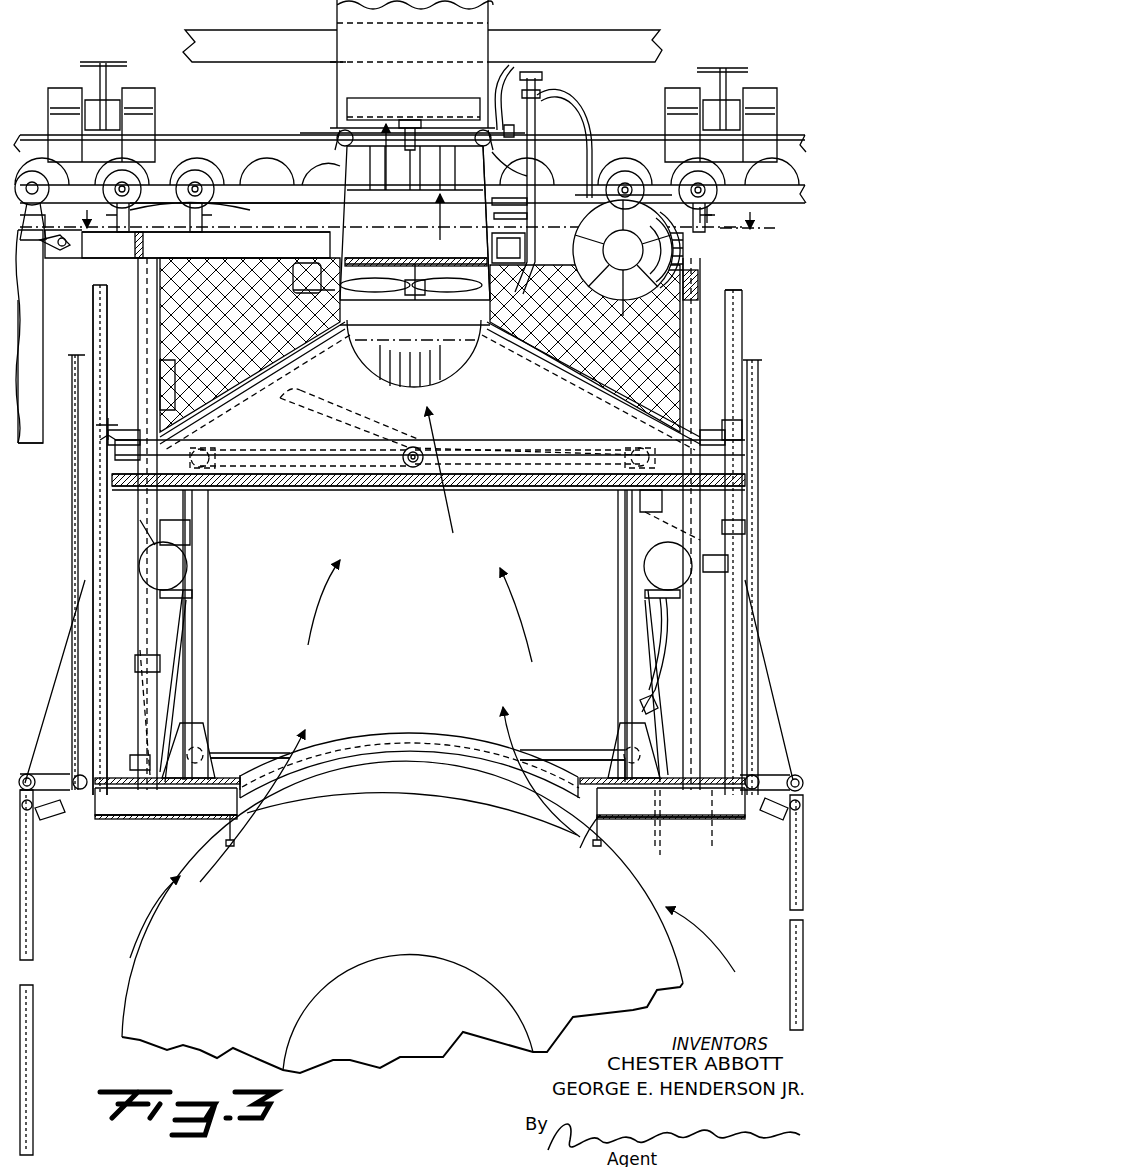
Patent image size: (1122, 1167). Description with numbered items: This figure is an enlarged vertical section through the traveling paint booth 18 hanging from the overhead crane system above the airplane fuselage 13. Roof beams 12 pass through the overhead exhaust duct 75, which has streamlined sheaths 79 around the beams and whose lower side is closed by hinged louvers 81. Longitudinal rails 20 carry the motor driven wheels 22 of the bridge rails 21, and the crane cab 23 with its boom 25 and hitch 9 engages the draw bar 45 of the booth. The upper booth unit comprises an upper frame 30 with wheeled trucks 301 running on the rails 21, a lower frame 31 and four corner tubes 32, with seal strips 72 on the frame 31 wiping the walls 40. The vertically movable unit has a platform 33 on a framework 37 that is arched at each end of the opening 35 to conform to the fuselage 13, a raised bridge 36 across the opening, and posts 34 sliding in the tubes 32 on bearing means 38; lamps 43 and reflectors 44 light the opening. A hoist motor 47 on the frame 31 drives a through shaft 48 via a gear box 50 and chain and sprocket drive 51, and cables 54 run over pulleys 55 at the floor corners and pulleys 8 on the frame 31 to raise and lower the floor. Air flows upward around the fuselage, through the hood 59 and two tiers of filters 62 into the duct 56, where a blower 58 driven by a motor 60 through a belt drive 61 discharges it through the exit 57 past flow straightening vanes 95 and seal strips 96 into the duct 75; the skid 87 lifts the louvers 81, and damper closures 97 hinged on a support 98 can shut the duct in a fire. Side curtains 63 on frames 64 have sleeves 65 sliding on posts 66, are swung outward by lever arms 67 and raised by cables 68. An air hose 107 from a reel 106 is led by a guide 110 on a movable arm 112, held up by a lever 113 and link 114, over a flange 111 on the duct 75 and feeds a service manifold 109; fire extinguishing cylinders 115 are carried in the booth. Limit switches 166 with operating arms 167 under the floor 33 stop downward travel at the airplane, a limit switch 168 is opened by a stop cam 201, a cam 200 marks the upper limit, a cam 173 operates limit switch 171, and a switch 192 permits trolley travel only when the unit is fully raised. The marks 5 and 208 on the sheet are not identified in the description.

The section line 5 is at (431, 217).
The pulleys 8 is at (635, 448).
The hitch 9 is at (68, 238).
The roof beams 12 is at (582, 55).
The fuselage 13 is at (420, 915).
The booth 18 is at (750, 340).
The longitudinal rails 20 is at (100, 62).
The bridge rails 21 is at (218, 120).
The motor driven wheels 22 is at (112, 100).
The crane cab 23 is at (25, 446).
The boom 25 is at (44, 265).
The upper frame 30 is at (700, 248).
The lower frame 31 is at (722, 450).
The corner tubes 32 is at (180, 555).
The platform 33 is at (240, 770).
The upstanding posts 34 is at (175, 680).
The opening 35 is at (262, 835).
The raised bridge 36 is at (432, 742).
The framework 37 is at (140, 815).
The anti-friction bearing means 38 is at (162, 660).
The side and end walls 40 is at (92, 606).
The lamps 43 is at (665, 540).
The reflectors 44 is at (655, 505).
The draw bar 45 is at (68, 292).
The electric motor 47 is at (172, 400).
The through shaft 48 is at (425, 455).
The speed reducing gear box 50 is at (350, 410).
The chain and sprocket drive 51 is at (320, 458).
The cables 54 is at (530, 460).
The pulleys 55 is at (205, 745).
The duct 56 is at (526, 248).
The exhaust exit 57 is at (340, 208).
The blower 58 is at (380, 284).
The hood 59 is at (498, 398).
The motor 60 is at (280, 266).
The belt and pulley drive 61 is at (308, 270).
The filters 62 is at (552, 490).
The side curtains 63 is at (34, 930).
The curtain frames 64 is at (34, 876).
The sleeves 65 is at (80, 775).
The posts 66 is at (72, 546).
The lever arms 67 is at (62, 820).
The cables 68 is at (60, 680).
The seal strips 72 is at (100, 468).
The overhead duct 75 is at (490, 12).
The streamlined sheaths 79 is at (350, 62).
The louvers 81 is at (390, 106).
The skid 87 is at (418, 124).
The flow straightening vanes 95 is at (470, 175).
The seal strips 96 is at (336, 140).
The damper closures 97 is at (440, 385).
The horizontal support 98 is at (340, 340).
The hose reel 106 is at (583, 232).
The air hose 107 is at (586, 116).
The service manifold 109 is at (645, 695).
The hose guide 110 is at (540, 90).
The flange 111 is at (492, 154).
The movable arm 112 is at (514, 130).
The lever 113 is at (503, 214).
The link 114 is at (508, 192).
The fire extinguishing cylinders 115 is at (178, 575).
The limit switches 166 is at (230, 830).
The operating arms 167 is at (135, 758).
The limit switch 168 is at (116, 425).
The limit switch 171 is at (720, 560).
The cam 173 is at (730, 540).
The switch 192 is at (731, 831).
The cam 200 is at (160, 690).
The stop cam 201 is at (124, 452).
The cable 208 is at (530, 52).
The wheeled trucks 301 is at (212, 208).